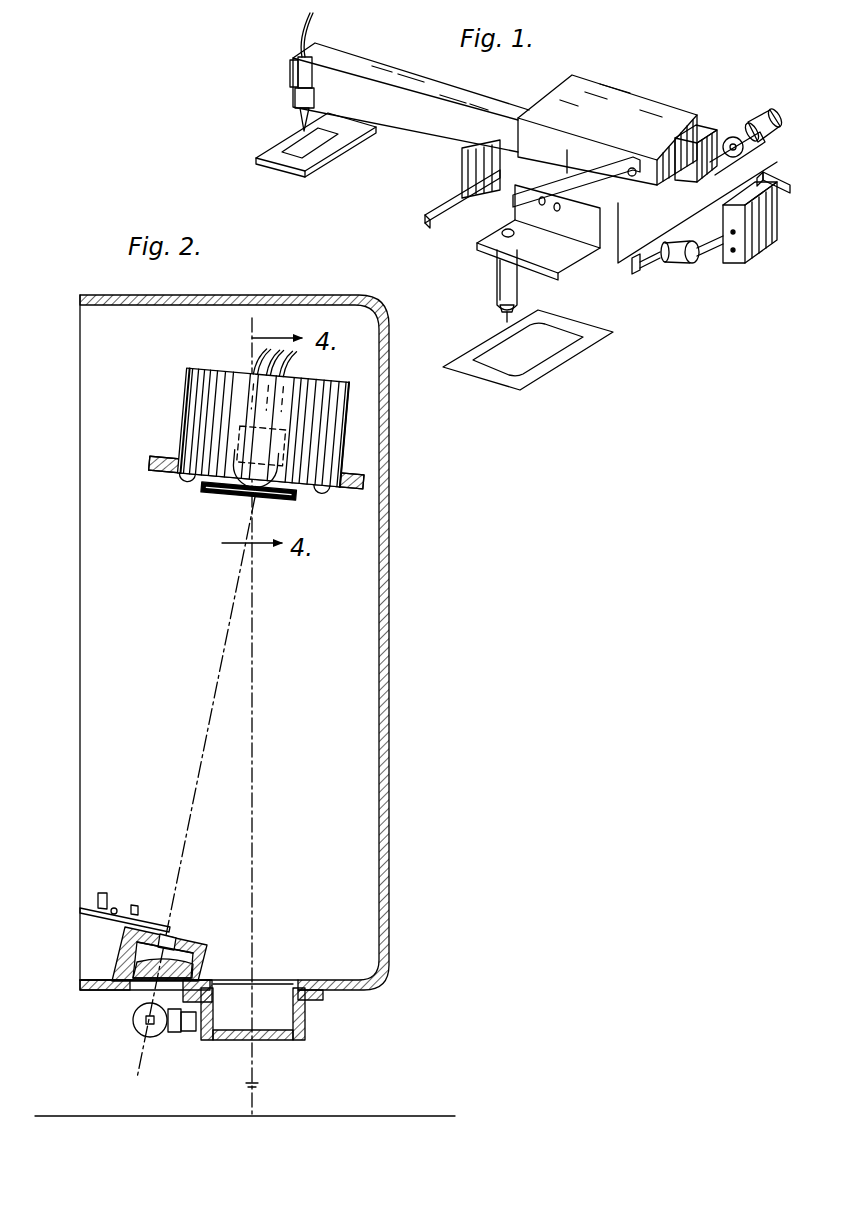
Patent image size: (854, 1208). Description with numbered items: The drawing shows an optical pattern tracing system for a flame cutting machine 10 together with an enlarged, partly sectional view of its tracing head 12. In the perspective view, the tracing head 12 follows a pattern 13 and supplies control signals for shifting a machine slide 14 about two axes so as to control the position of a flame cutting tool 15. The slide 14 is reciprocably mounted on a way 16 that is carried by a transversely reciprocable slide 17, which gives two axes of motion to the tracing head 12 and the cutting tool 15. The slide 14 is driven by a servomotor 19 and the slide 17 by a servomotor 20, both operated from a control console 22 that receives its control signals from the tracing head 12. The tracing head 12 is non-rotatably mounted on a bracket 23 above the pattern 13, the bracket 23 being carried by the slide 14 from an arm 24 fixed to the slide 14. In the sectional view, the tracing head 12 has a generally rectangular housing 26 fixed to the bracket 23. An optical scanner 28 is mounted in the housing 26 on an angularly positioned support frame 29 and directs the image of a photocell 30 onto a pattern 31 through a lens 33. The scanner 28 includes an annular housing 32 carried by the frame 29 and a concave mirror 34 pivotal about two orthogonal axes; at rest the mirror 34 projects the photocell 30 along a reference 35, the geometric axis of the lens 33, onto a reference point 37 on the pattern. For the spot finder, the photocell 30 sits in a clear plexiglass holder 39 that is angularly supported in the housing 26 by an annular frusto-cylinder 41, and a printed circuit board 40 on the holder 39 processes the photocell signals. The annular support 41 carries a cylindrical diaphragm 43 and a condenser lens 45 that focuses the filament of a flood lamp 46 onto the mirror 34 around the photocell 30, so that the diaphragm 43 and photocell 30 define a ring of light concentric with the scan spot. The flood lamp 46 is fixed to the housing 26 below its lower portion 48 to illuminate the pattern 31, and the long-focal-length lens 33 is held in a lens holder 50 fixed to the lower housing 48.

In FIG. 1, the flame cutting machine 10 is at (580, 52).
In FIG. 1, the tracing head 12 is at (497, 272).
In FIG. 2, the tracing head 12 is at (414, 470).
In FIG. 1, the pattern 13 is at (525, 370).
In FIG. 1, the machine slide 14 is at (405, 107).
In FIG. 1, the flame cutting tool 15 is at (300, 106).
In FIG. 1, the way 16 is at (765, 148).
In FIG. 1, the transversely reciprocable slide 17 is at (660, 200).
In FIG. 1, the servomotor 19 is at (748, 133).
In FIG. 1, the servomotor 20 is at (682, 264).
In FIG. 1, the control console 22 is at (760, 258).
In FIG. 1, the bracket 23 is at (500, 234).
In FIG. 1, the arm 24 is at (580, 150).
In FIG. 2, the housing 26 is at (390, 571).
In FIG. 2, the optical scanner 28 is at (166, 400).
In FIG. 2, the support frame 29 is at (152, 460).
In FIG. 2, the photocell 30 is at (168, 930).
In FIG. 2, the pattern 31 is at (355, 1115).
In FIG. 2, the annular housing 32 is at (196, 372).
In FIG. 2, the lens 33 is at (257, 1040).
In FIG. 2, the mirror 34 is at (205, 489).
In FIG. 2, the reference 35 is at (257, 710).
In FIG. 2, the reference point 37 is at (255, 1114).
In FIG. 2, the holder 39 is at (122, 928).
In FIG. 2, the printed circuit board 40 is at (93, 906).
In FIG. 2, the annular frusto-cylinder 41 is at (118, 956).
In FIG. 2, the cylindrical diaphragm 43 is at (196, 956).
In FIG. 2, the condenser lens 45 is at (150, 981).
In FIG. 2, the flood lamp 46 is at (140, 1030).
In FIG. 2, the lower portion of the housing 48 is at (85, 992).
In FIG. 2, the lens holder 50 is at (306, 1012).